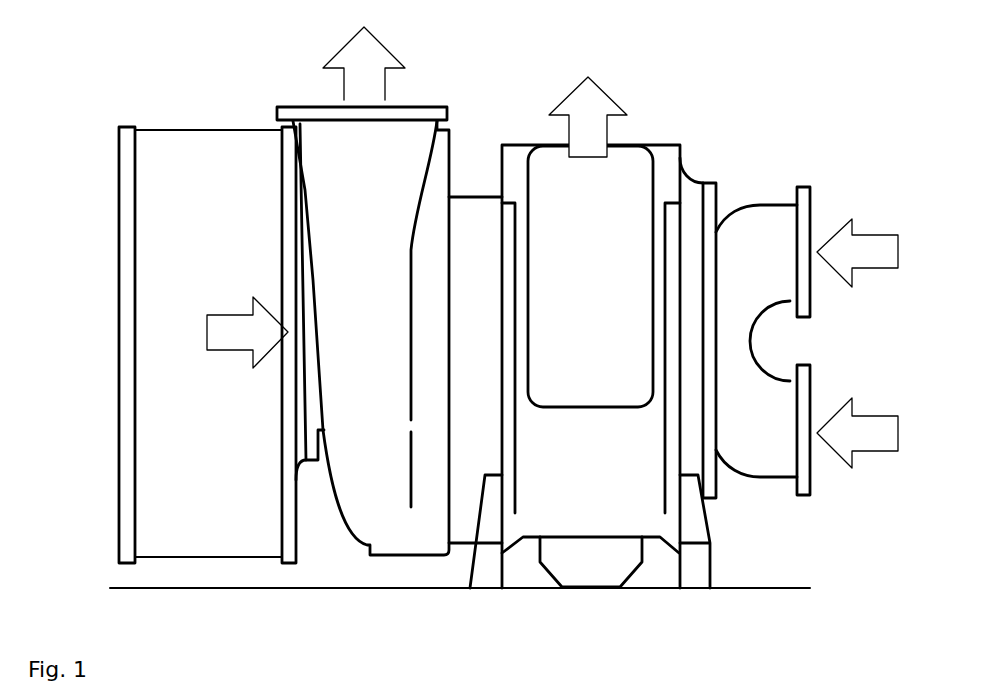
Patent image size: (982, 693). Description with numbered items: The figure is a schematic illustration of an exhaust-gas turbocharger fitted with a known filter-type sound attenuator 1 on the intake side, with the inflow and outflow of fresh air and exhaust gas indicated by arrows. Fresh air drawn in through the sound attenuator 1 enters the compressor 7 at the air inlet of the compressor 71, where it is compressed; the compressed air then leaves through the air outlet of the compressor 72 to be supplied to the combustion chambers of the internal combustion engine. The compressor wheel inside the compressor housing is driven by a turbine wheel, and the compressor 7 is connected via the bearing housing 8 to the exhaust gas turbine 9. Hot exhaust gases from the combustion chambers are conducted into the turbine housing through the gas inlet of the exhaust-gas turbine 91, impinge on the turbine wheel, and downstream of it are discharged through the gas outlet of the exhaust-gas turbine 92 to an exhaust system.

The sound attenuator 1 is at (162, 477).
The compressor 7 is at (369, 352).
The bearing housing 8 is at (463, 217).
The exhaust gas turbine 9 is at (632, 457).
The air inlet of the compressor 71 is at (247, 332).
The air outlet of the compressor 72 is at (364, 63).
The gas inlet of the exhaust-gas turbine 91 is at (857, 253).
The gas outlet of the exhaust-gas turbine 92 is at (588, 117).